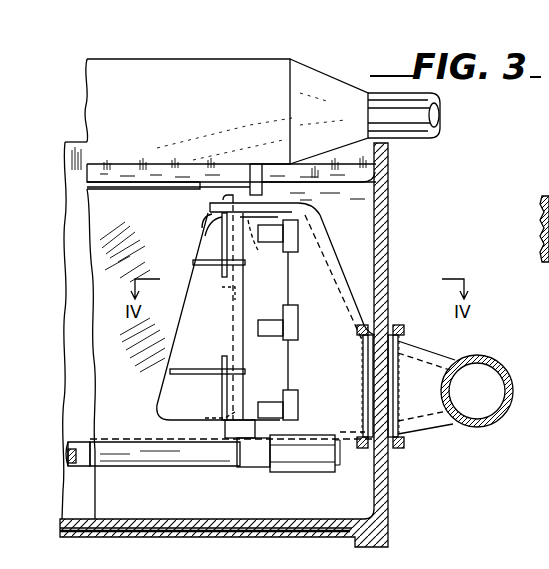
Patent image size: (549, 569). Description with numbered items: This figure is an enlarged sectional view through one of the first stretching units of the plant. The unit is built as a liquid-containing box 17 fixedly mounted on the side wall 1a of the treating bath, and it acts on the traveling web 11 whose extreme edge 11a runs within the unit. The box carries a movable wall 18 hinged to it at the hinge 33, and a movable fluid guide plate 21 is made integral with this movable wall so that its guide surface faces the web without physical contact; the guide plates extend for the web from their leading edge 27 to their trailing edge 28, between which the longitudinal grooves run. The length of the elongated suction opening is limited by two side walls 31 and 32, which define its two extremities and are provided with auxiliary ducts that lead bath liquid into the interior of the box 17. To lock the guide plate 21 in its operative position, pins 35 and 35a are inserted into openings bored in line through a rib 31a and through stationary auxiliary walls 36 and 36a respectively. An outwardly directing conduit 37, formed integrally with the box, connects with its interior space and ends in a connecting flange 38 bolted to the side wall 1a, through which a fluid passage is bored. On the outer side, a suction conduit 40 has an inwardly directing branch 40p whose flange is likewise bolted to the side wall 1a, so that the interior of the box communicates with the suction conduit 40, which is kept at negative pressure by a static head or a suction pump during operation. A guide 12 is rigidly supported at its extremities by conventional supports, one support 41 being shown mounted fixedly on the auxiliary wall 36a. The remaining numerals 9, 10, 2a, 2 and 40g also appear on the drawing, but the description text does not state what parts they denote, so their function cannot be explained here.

The hopper 9 is at (232, 64).
The flange 10 is at (112, 182).
The plate 2a is at (328, 190).
The stationary auxiliary wall 36 is at (256, 190).
The housing wall 2 is at (366, 213).
The side wall 1a is at (380, 248).
The traveling web 11 is at (94, 272).
The edge of the web 11a is at (217, 298).
The liquid-containing box 17 is at (330, 278).
The side wall of the opening 31 is at (207, 213).
The leading edge 27 is at (203, 216).
The pin 35 is at (210, 247).
The rib 31a is at (238, 262).
The pin 35a is at (223, 360).
The side wall of the opening 32 is at (212, 405).
The movable fluid guide plate 21 is at (168, 362).
The hinge 33 is at (298, 326).
The movable wall 18 is at (288, 353).
The guide 12 is at (74, 448).
The trailing edge 28 is at (190, 428).
The stationary auxiliary wall 36a is at (238, 428).
The support 41 is at (315, 470).
The connecting flange 38 is at (364, 448).
The outwardly directing conduit 37 is at (352, 394).
The suction conduit 40 is at (486, 413).
The inwardly directing branch 40p is at (442, 368).
The pipe neck 40g is at (398, 406).